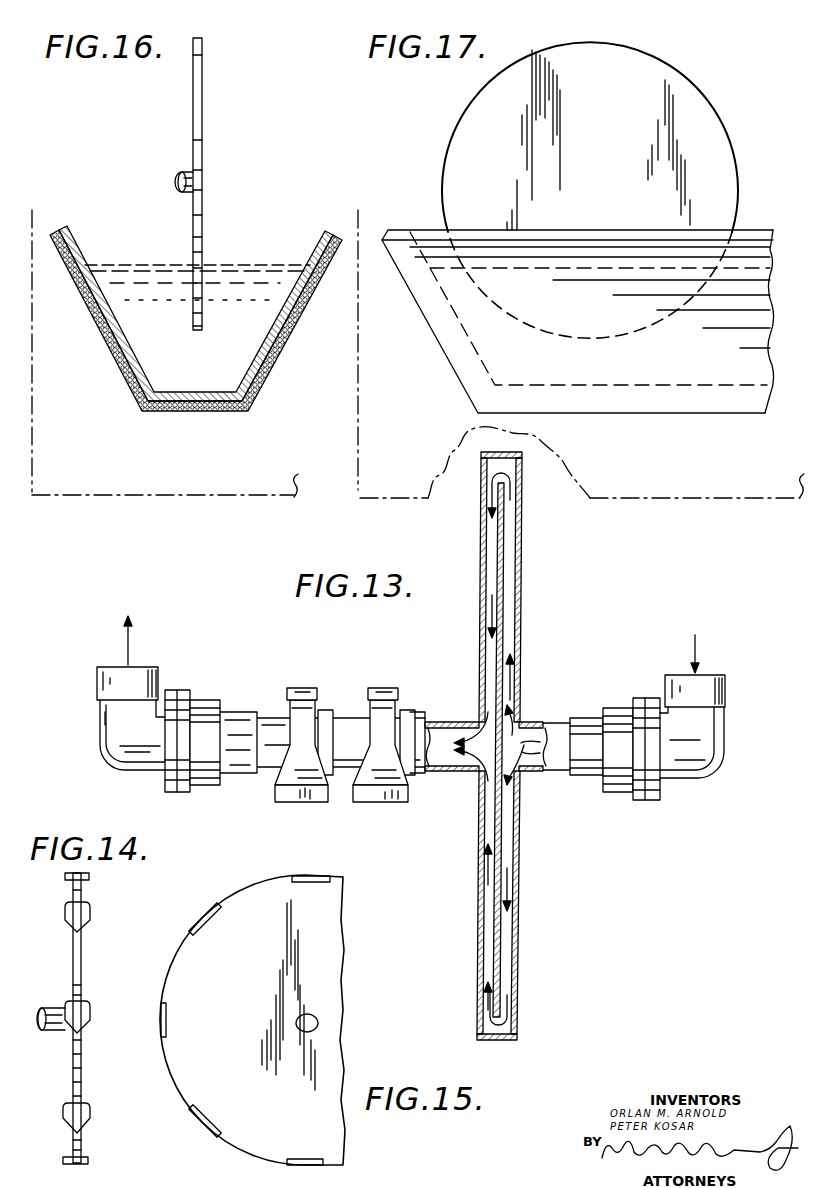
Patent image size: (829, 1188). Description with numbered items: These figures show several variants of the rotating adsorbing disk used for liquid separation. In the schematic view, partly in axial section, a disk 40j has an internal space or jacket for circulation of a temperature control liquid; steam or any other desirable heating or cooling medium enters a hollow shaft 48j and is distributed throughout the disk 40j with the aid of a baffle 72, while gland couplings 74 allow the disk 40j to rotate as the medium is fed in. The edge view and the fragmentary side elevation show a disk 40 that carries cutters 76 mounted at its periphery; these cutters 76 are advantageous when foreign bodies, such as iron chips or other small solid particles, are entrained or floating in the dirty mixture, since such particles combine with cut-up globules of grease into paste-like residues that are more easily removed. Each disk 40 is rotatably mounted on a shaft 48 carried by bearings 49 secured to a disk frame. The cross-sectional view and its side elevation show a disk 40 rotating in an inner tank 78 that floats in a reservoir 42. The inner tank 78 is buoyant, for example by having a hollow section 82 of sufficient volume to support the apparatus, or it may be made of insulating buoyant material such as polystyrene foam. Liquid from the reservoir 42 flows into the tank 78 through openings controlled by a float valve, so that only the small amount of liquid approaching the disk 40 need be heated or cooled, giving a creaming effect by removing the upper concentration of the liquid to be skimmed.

In FIG. 16, the disk 40 is at (201, 130).
In FIG. 17, the disk 40 is at (710, 103).
In FIG. 14, the disk 40 is at (83, 967).
In FIG. 15, the disk 40 is at (333, 895).
In FIG. 13, the jacketed disk 40j is at (520, 664).
In FIG. 16, the reservoir 42 is at (58, 498).
In FIG. 17, the reservoir 42 is at (740, 498).
In FIG. 16, the shaft 48 is at (186, 176).
In FIG. 14, the shaft 48 is at (45, 1013).
In FIG. 13, the hollow shaft 48j is at (450, 775).
In FIG. 13, the bearings 49 is at (377, 690).
In FIG. 13, the baffle 72 is at (511, 536).
In FIG. 13, the gland couplings 74 is at (203, 787).
In FIG. 14, the cutters 76 is at (66, 915).
In FIG. 15, the cutters 76 is at (210, 922).
In FIG. 16, the inner tank 78 is at (204, 407).
In FIG. 17, the inner tank 78 is at (440, 350).
In FIG. 16, the hollow section 82 is at (120, 334).